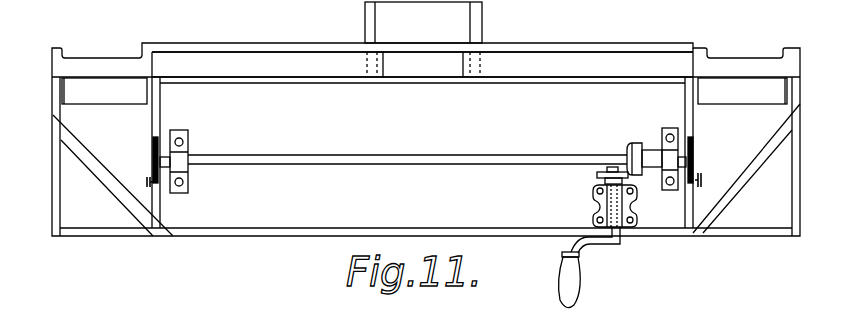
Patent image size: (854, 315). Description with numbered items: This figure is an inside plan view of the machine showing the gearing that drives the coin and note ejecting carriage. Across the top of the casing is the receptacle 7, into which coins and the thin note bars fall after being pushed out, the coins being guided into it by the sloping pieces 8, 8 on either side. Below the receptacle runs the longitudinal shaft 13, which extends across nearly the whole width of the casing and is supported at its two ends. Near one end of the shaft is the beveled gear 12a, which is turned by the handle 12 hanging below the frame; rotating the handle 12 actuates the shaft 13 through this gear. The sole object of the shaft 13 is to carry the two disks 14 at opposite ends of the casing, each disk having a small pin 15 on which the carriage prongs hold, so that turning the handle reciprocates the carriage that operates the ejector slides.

The receptacle 7 is at (423, 39).
The sloping pieces 8 is at (422, 64).
The handle 12 is at (581, 274).
The beveled gear 12a is at (606, 172).
The longitudinal shaft 13 is at (380, 158).
The disks 14 is at (153, 139).
The pin 15 is at (150, 180).